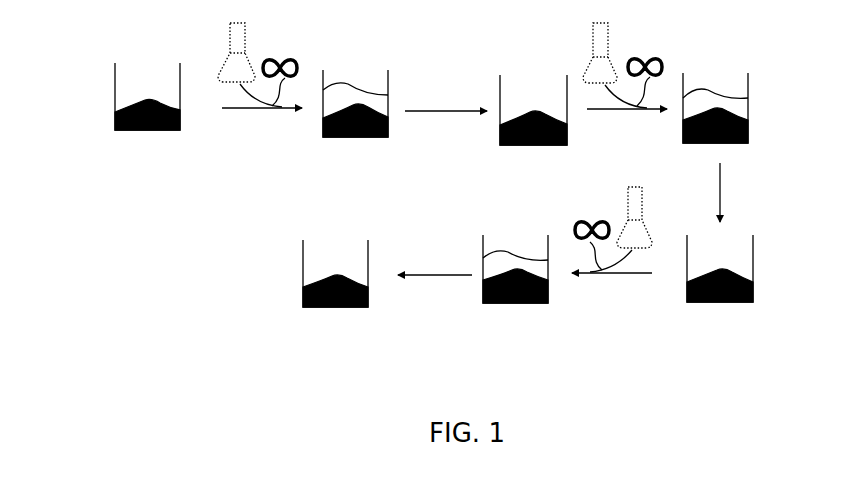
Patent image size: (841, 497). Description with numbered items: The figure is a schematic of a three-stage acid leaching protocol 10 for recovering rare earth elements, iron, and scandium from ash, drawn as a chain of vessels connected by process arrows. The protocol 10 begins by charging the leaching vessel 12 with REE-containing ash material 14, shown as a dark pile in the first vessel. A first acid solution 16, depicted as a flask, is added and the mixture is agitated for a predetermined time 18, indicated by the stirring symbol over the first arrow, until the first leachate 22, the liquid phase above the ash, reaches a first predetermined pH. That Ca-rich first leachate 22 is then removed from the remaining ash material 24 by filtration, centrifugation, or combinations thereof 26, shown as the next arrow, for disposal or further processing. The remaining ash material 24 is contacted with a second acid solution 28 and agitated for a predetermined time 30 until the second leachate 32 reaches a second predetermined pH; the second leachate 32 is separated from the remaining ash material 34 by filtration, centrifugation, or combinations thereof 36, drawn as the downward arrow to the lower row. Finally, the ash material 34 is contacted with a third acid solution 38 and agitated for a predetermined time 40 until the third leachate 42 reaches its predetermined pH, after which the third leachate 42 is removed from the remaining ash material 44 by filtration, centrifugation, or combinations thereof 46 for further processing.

The REE leaching protocol 10 is at (143, 262).
The leaching vessel 12 is at (115, 88).
The REE-containing ash material 14 is at (160, 107).
The first acid solution 16 is at (228, 72).
The first leaching step 18 is at (245, 110).
The first leachate 22 is at (382, 102).
The remaining ash material 24 is at (528, 112).
The filtration and/or centrifugation 26 is at (440, 112).
The second acid solution 28 is at (595, 72).
The second leaching step 30 is at (610, 110).
The second leachate 32 is at (745, 108).
The remaining ash material 34 is at (752, 285).
The filtration and/or centrifugation 36 is at (722, 195).
The third acid solution 38 is at (645, 232).
The third leaching step 40 is at (625, 275).
The third leachate 42 is at (500, 262).
The remaining ash material 44 is at (335, 275).
The filtration and/or centrifugation 46 is at (430, 275).